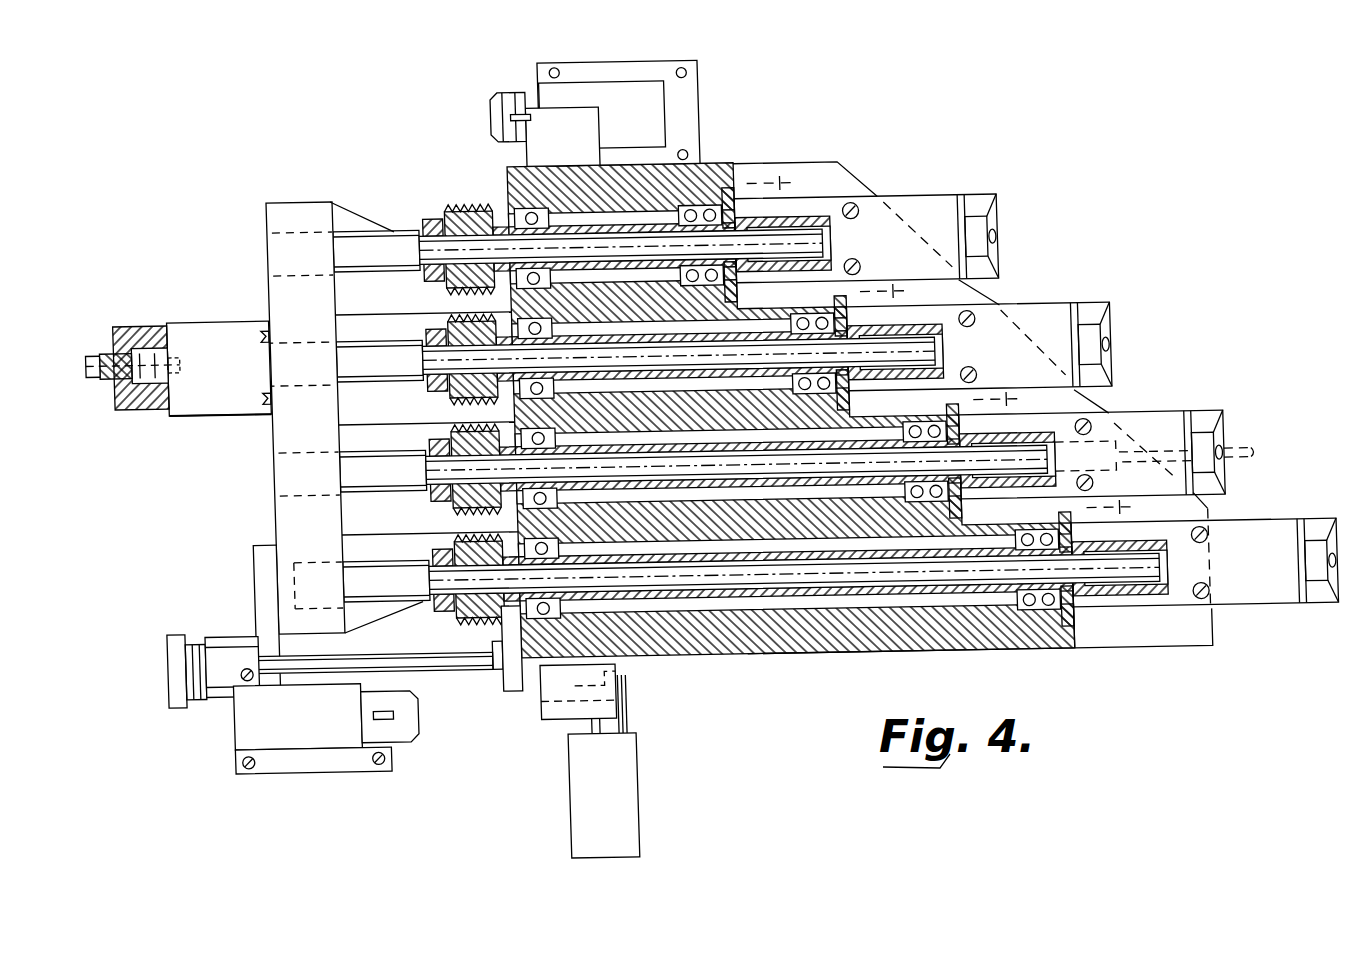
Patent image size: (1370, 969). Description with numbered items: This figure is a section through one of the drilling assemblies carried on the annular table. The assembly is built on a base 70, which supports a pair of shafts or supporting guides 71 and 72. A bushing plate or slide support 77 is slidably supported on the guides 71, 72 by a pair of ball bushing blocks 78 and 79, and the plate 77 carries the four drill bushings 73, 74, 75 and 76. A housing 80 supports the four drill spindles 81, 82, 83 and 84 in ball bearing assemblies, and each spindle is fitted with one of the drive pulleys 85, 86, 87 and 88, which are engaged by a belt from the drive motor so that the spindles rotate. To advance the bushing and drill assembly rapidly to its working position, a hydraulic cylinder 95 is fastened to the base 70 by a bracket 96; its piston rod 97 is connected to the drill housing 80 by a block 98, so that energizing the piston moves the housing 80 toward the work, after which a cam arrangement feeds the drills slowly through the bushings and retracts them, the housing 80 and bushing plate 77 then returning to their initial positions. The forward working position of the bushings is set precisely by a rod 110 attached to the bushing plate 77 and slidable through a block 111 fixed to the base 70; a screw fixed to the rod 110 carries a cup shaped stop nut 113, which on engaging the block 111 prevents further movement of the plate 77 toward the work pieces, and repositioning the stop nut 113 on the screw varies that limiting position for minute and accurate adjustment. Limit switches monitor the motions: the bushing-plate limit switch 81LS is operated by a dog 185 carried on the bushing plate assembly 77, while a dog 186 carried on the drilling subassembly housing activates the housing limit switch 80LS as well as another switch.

The base 70 is at (276, 479).
The supporting guide 71 is at (359, 561).
The supporting guide 72 is at (389, 233).
The drill bushing 73 is at (1305, 553).
The drill bushing 74 is at (1193, 446).
The drill bushing 75 is at (1091, 334).
The drill bushing 76 is at (985, 225).
The bushing plate 77 is at (747, 182).
The ball bushing block 78 is at (1018, 661).
The ball bushing block 79 is at (777, 191).
The housing 80 is at (846, 665).
The drill spindle 81 is at (414, 574).
The drill spindle 82 is at (412, 473).
The drill spindle 83 is at (411, 363).
The drill spindle 84 is at (430, 235).
The drive pulley 85 is at (449, 624).
The drive pulley 86 is at (440, 516).
The drive pulley 87 is at (443, 406).
The drive pulley 88 is at (437, 283).
The hydraulic cylinder 95 is at (155, 633).
The bracket 96 is at (254, 570).
The piston rod 97 is at (382, 657).
The block 98 is at (488, 690).
The rod 110 is at (225, 338).
The block 111 is at (230, 413).
The stop nut 113 is at (121, 322).
The dog 185 is at (553, 138).
The dog 186 is at (532, 718).
The BOLS switch 80LS is at (293, 744).
The BILS switch 81LS is at (653, 126).